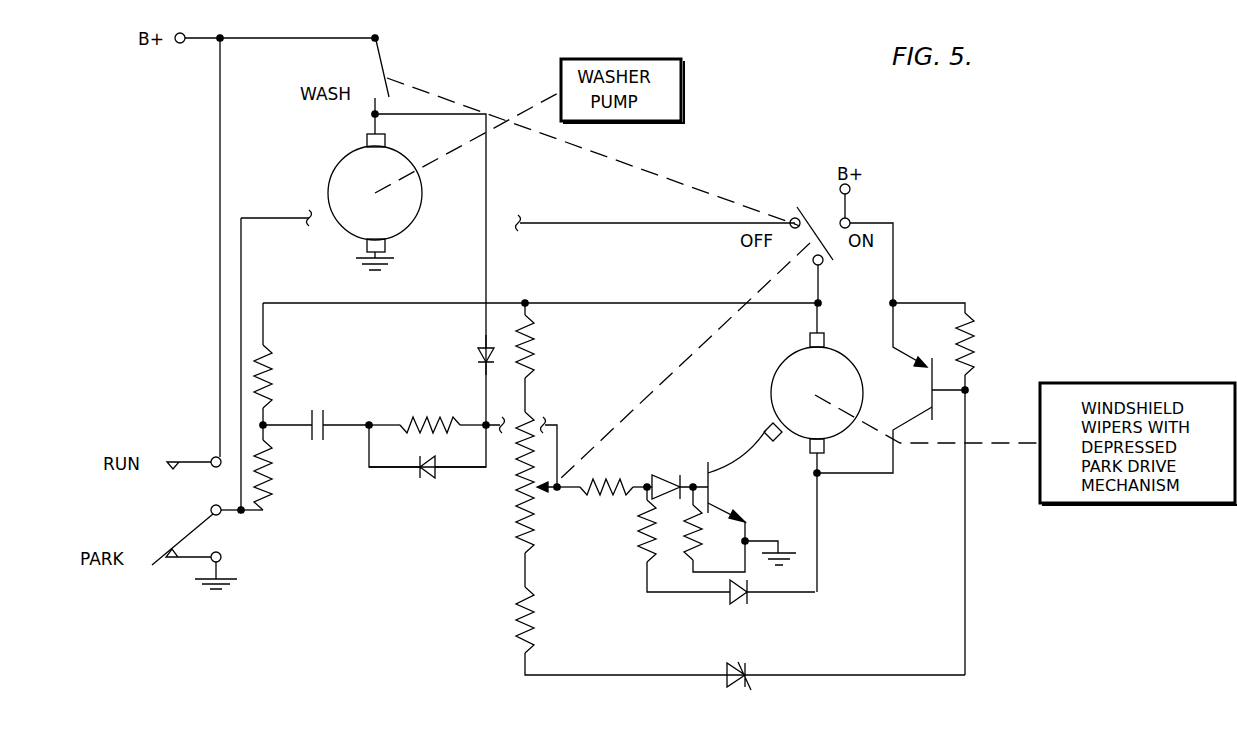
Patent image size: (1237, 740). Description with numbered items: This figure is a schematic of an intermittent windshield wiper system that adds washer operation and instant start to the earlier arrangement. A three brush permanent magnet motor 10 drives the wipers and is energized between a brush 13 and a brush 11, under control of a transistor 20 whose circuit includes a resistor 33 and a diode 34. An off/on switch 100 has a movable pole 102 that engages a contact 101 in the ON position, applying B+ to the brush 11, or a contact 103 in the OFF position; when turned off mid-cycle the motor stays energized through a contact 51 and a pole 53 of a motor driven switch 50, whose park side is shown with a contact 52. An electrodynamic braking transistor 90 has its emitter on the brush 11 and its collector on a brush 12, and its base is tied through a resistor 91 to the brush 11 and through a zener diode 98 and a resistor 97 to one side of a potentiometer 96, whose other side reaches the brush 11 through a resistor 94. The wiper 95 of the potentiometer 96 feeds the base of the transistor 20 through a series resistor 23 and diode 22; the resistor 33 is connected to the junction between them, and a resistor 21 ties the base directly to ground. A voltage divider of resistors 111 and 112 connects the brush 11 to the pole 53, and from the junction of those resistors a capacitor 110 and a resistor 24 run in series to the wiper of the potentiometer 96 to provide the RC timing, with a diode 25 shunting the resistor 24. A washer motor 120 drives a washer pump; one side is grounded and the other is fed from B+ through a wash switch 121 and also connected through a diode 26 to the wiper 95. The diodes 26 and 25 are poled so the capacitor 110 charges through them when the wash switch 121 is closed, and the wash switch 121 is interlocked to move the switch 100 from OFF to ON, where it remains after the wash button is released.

The motor 10 is at (827, 387).
The brush 11 is at (808, 340).
The brush 12 is at (824, 441).
The brush 13 is at (767, 423).
The transistor 20 is at (723, 485).
The resistor 21 is at (682, 547).
The diode 22 is at (668, 480).
The resistor 23 is at (606, 482).
The resistor 24 is at (422, 417).
The diode 25 is at (425, 477).
The diode 26 is at (475, 350).
The resistor 33 is at (637, 532).
The diode 34 is at (738, 600).
The motor driven switch 50 is at (192, 509).
The contact 51 is at (188, 462).
The park contact 52 is at (200, 556).
The pole 53 is at (243, 515).
The electrodynamic braking transistor 90 is at (908, 393).
The resistor 91 is at (978, 346).
The resistor 94 is at (535, 333).
The wiper 95 is at (538, 490).
The potentiometer 96 is at (518, 513).
The resistor 97 is at (517, 613).
The zener diode 98 is at (742, 663).
The off/on switch 100 is at (818, 212).
The contact 101 is at (848, 207).
The movable pole 102 is at (818, 238).
The contact 103 is at (792, 217).
The capacitor 110 is at (327, 412).
The resistor 111 is at (275, 468).
The resistor 112 is at (277, 366).
The washer motor 120 is at (338, 174).
The wash switch 121 is at (387, 68).